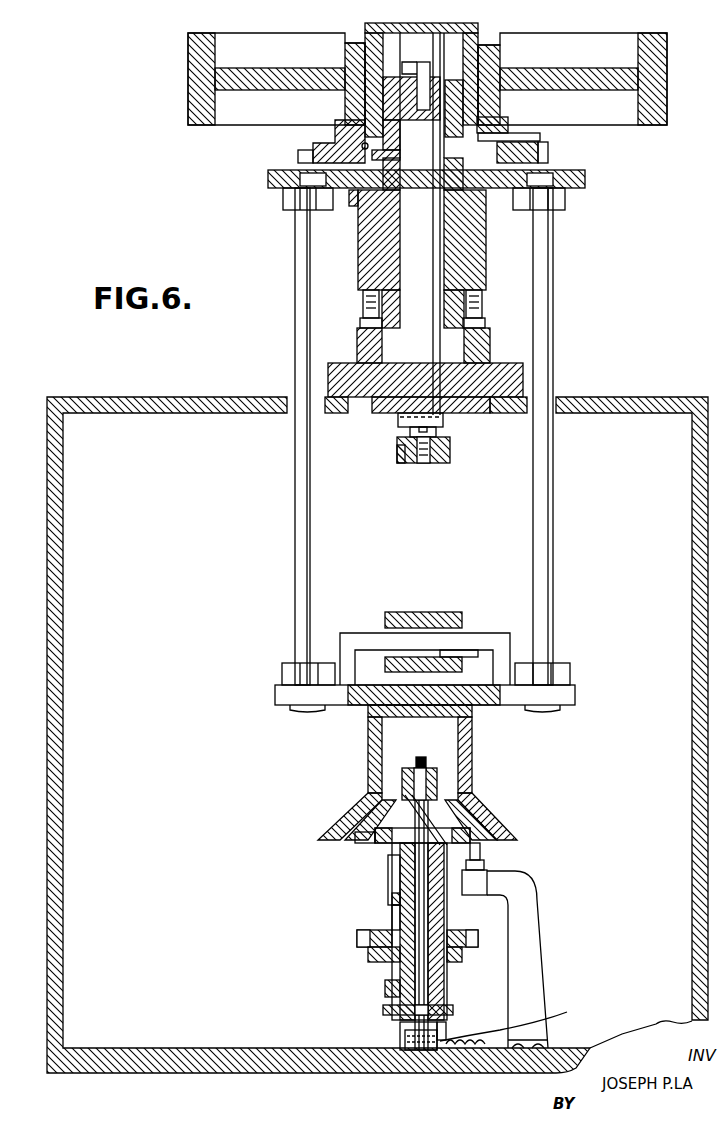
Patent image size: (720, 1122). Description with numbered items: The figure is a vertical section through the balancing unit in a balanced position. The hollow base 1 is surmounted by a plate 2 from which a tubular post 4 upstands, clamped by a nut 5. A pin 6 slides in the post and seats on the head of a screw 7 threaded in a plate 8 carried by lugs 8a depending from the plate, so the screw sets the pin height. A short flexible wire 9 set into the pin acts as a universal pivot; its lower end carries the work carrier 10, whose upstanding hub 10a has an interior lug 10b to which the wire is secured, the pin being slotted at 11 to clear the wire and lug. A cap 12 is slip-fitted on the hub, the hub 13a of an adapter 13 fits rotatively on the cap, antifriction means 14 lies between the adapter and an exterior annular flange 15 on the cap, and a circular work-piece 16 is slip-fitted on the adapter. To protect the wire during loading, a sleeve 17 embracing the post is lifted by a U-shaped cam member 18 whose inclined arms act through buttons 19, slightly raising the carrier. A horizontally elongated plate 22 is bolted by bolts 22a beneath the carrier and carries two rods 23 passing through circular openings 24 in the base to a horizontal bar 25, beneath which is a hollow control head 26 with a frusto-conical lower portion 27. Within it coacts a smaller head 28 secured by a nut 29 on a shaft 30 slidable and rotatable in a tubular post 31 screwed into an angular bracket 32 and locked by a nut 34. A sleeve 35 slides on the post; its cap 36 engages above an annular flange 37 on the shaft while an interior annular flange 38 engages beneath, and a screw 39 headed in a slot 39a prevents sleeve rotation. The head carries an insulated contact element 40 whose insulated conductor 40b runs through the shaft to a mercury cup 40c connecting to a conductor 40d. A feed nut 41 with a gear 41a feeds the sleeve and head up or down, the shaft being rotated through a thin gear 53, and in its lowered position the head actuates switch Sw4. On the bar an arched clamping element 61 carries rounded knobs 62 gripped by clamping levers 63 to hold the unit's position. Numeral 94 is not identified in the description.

The hollow base 1 is at (617, 398).
The plate 2 is at (497, 369).
The tubular post 4 is at (474, 256).
The nut 5 is at (398, 426).
The pin 6 is at (418, 259).
The screw 7 is at (437, 432).
The plate 8 is at (450, 453).
The lugs 8a is at (398, 450).
The flexible wire 9 is at (447, 25).
The work carrier 10 is at (401, 161).
The hub 10a is at (401, 149).
The interior lug 10b is at (414, 121).
The slot 11 is at (410, 72).
The cap 12 is at (420, 23).
The adapter 13 is at (322, 136).
The hub of adapter 13a is at (479, 33).
The antifriction means 14 is at (503, 121).
The exterior annular flange 15 is at (518, 134).
The circular work-piece 16 is at (667, 78).
The sleeve 17 is at (358, 258).
The U-shaped cam member 18 is at (357, 340).
The buttons 19 is at (485, 322).
The horizontally elongated plate 22 is at (585, 183).
The bolts 22a is at (353, 206).
The rods 23 is at (294, 459).
The circular openings 24 is at (286, 412).
The bar 25 is at (343, 705).
The control head 26 is at (472, 744).
The frusto-conical lower portion 27 is at (493, 813).
The head 28 is at (442, 812).
The nut 29 is at (415, 758).
The shaft 30 is at (402, 778).
The tubular post 31 is at (448, 904).
The angular bracket 32 is at (374, 962).
The nut 34 is at (385, 990).
The sleeve 35 is at (392, 908).
The cap 36 is at (378, 845).
The annular flange 37 is at (426, 802).
The interior annular flange 38 is at (482, 853).
The screw 39 is at (388, 872).
The slot 39a is at (390, 891).
The contact element 40 is at (358, 838).
The insulated conductor 40b is at (462, 960).
The mercury cup 40c is at (400, 1030).
The conductor 40d is at (472, 1073).
The feed nut 41 is at (476, 946).
The gear 41a is at (357, 938).
The gear 53 is at (453, 1010).
The arched clamping element 61 is at (355, 633).
The knobs 62 is at (432, 627).
The clamping levers 63 is at (462, 650).
The plate 94 is at (548, 150).
The switch Sw4 is at (477, 896).